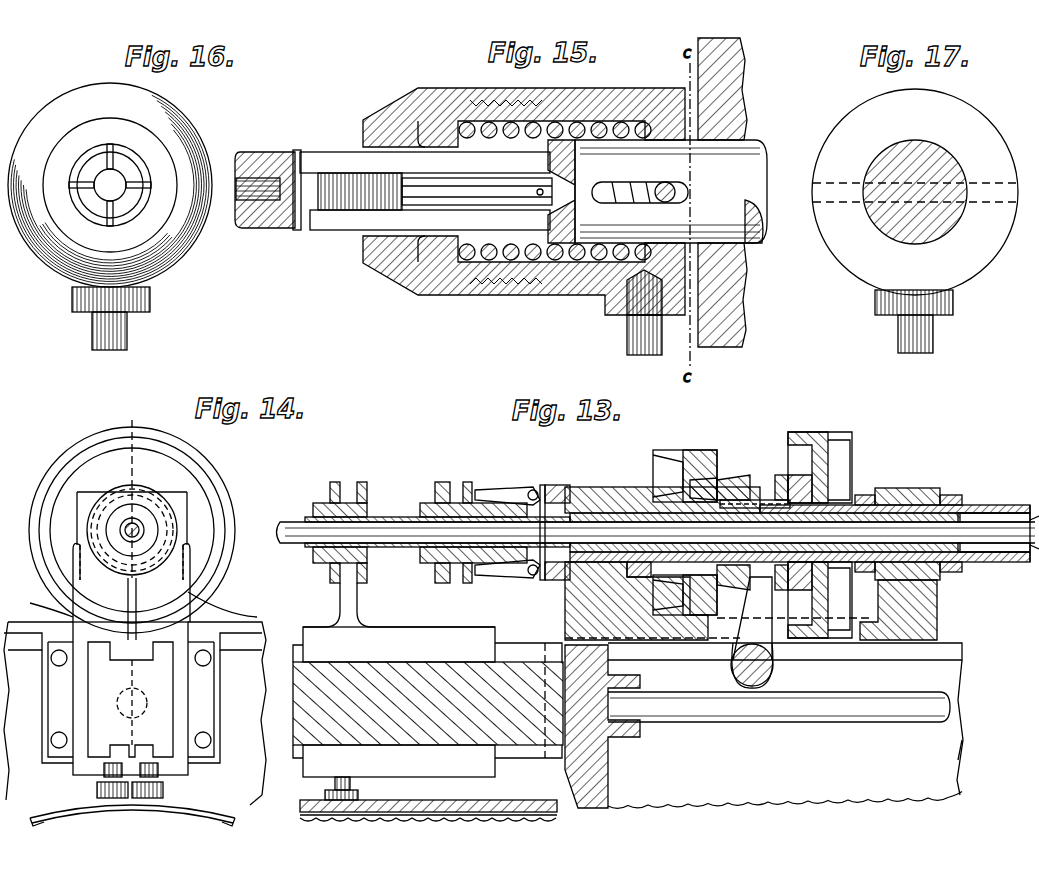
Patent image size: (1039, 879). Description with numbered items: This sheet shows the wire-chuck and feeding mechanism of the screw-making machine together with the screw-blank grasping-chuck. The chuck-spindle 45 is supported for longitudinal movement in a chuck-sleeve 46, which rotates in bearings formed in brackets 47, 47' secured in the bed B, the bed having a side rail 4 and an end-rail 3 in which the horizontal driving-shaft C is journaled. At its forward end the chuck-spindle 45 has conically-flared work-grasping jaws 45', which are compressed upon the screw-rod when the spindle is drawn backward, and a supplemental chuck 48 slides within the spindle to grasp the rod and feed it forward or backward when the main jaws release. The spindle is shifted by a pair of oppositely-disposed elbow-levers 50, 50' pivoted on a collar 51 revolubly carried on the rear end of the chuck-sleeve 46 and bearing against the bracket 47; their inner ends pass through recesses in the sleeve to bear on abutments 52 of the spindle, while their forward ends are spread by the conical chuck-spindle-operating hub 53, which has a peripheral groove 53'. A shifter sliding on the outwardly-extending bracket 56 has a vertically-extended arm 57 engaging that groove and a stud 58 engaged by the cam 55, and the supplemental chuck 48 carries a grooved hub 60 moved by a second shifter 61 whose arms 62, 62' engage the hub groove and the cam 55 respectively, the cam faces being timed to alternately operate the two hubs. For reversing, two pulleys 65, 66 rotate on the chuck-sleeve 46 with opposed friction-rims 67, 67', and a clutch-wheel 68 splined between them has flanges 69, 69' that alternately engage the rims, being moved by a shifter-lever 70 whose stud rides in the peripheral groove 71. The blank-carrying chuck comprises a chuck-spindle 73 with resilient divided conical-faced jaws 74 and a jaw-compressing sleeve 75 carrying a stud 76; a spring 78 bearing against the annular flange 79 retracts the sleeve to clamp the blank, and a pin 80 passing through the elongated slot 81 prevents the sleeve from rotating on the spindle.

In FIG. 13, the end-rail 3 is at (608, 757).
In FIG. 13, the side rail 4 is at (958, 736).
In FIG. 13, the chuck-spindle 45 is at (947, 510).
In FIG. 13, the work-grasping jaws 45' is at (942, 565).
In FIG. 13, the chuck-sleeve 46 is at (592, 500).
In FIG. 14, the bracket 47 is at (131, 519).
In FIG. 13, the bracket 47 is at (624, 601).
In FIG. 13, the bracket 47' is at (916, 610).
In FIG. 14, the supplemental chuck 48 is at (118, 529).
In FIG. 13, the supplemental chuck 48 is at (395, 548).
In FIG. 13, the elbow-lever 50 is at (507, 478).
In FIG. 13, the elbow-lever 50' is at (507, 585).
In FIG. 13, the collar 51 is at (555, 486).
In FIG. 13, the abutments 52 is at (533, 489).
In FIG. 13, the chuck-spindle-operating hub 53 is at (473, 488).
In FIG. 13, the peripheral groove 53' is at (473, 581).
In FIG. 14, the cam 55 is at (196, 812).
In FIG. 13, the cam 55 is at (512, 806).
In FIG. 14, the bracket 56 is at (130, 694).
In FIG. 13, the bracket 56 is at (516, 660).
In FIG. 14, the vertically-extended arm 57 is at (143, 566).
In FIG. 14, the stud 58 is at (150, 800).
In FIG. 14, the peripherally-grooved hub 60 is at (126, 486).
In FIG. 13, the peripherally-grooved hub 60 is at (367, 498).
In FIG. 13, the shifter 61 is at (386, 628).
In FIG. 14, the arm 62 is at (91, 605).
In FIG. 13, the arm 62 is at (399, 605).
In FIG. 14, the arm 62' is at (111, 796).
In FIG. 13, the arm 62' is at (350, 778).
In FIG. 14, the pulley 65 is at (212, 482).
In FIG. 13, the pulley 65 is at (822, 434).
In FIG. 14, the pulley 66 is at (205, 506).
In FIG. 13, the pulley 66 is at (705, 452).
In FIG. 13, the friction-rim 67 is at (802, 517).
In FIG. 13, the friction-rim 67' is at (717, 474).
In FIG. 13, the clutch-wheel 68 is at (748, 580).
In FIG. 13, the flange 69 is at (744, 521).
In FIG. 13, the flange 69' is at (787, 516).
In FIG. 13, the shifter-lever 70 is at (762, 636).
In FIG. 13, the peripheral groove 71 is at (762, 498).
In FIG. 15, the chuck-spindle 73 is at (671, 191).
In FIG. 17, the chuck-spindle 73 is at (930, 152).
In FIG. 16, the screw-blank-grasping jaws 74 is at (128, 172).
In FIG. 15, the screw-blank-grasping jaws 74 is at (328, 160).
In FIG. 16, the jaw-compressing sleeve 75 is at (182, 126).
In FIG. 15, the jaw-compressing sleeve 75 is at (612, 98).
In FIG. 17, the jaw-compressing sleeve 75 is at (970, 114).
In FIG. 16, the stud 76 is at (92, 334).
In FIG. 15, the stud 76 is at (627, 336).
In FIG. 17, the stud 76 is at (898, 332).
In FIG. 15, the spring 78 is at (528, 140).
In FIG. 15, the annular flange 79 is at (455, 248).
In FIG. 15, the pin 80 is at (665, 182).
In FIG. 15, the elongated slot 81 is at (614, 186).
In FIG. 14, the shaft S is at (136, 526).
In FIG. 13, the shaft S is at (656, 522).
In FIG. 14, the bed B is at (135, 713).
In FIG. 13, the bed B is at (785, 725).
In FIG. 13, the driving-shaft C is at (850, 702).